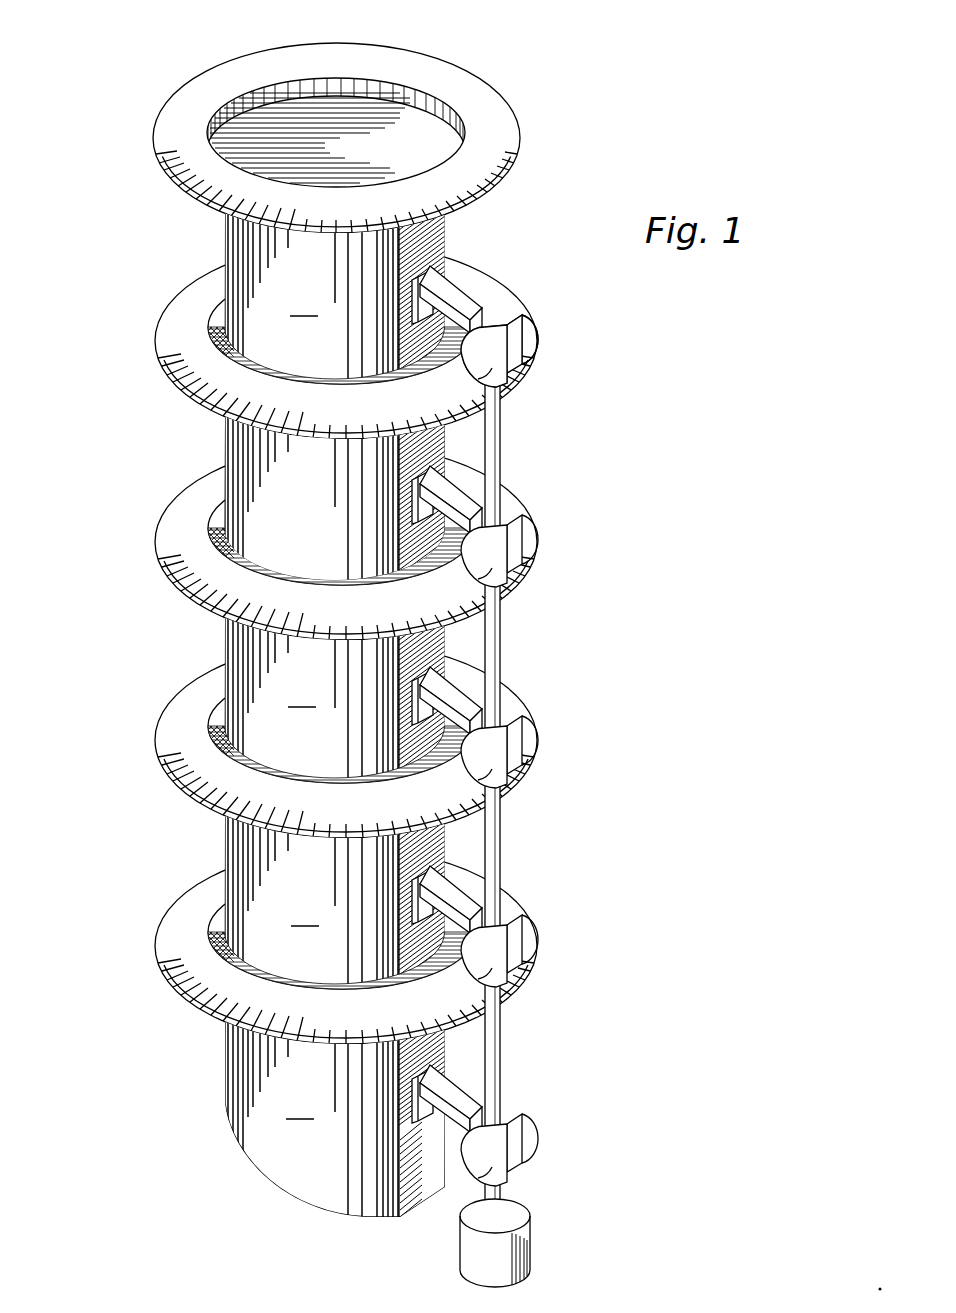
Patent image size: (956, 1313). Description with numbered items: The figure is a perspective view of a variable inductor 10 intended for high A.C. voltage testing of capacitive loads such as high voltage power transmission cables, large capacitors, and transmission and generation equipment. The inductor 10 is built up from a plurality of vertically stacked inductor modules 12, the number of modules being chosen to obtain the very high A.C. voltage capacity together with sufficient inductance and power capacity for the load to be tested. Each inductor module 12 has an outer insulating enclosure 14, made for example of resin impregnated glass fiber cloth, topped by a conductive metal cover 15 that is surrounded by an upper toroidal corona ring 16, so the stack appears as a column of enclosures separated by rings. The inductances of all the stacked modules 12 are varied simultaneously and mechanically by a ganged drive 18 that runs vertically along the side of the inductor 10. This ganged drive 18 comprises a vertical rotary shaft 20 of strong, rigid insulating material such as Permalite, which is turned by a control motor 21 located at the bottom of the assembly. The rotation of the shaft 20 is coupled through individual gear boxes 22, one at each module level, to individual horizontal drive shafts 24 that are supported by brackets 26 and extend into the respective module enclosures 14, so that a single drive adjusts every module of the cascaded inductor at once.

The variable inductor 10 is at (548, 145).
The inductor module 12 is at (263, 700).
The outer insulating enclosure 14 is at (340, 700).
The conductive metal cover 15 is at (420, 137).
The upper toroidal corona ring 16 is at (312, 522).
The ganged drive 18 is at (533, 395).
The vertical rotary shaft 20 is at (545, 779).
The control motor 21 is at (470, 1248).
The gear box 22 is at (548, 749).
The horizontal drive shaft 24 is at (495, 705).
The bracket 26 is at (496, 675).